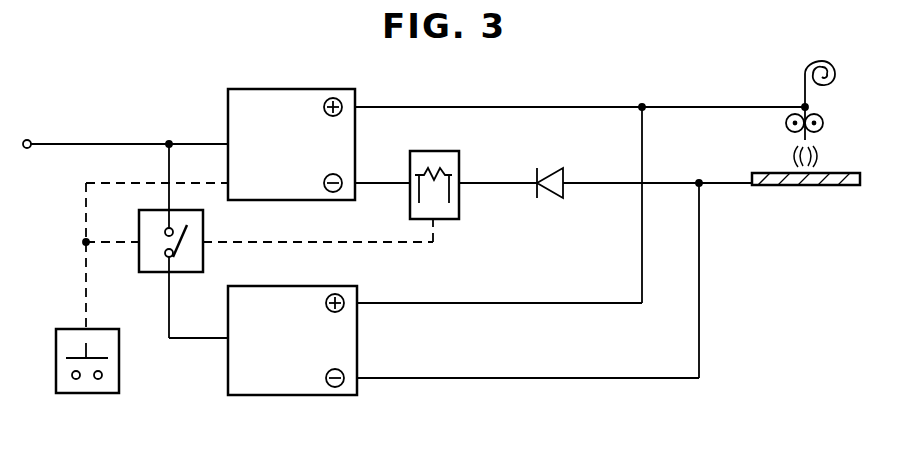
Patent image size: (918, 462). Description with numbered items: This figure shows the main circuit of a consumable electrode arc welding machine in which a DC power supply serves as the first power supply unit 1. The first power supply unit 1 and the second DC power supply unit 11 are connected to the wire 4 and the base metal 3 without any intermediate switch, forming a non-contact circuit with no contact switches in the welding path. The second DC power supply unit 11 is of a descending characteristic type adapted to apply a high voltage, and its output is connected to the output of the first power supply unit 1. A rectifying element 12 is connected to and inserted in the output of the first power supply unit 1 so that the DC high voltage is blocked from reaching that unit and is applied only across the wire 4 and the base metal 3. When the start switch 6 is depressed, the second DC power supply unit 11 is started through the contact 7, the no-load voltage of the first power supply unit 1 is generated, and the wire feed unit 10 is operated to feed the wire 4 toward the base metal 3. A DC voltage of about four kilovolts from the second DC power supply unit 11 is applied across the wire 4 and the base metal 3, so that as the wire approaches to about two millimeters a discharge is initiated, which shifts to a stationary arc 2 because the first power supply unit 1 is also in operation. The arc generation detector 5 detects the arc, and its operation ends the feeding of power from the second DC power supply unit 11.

The first power supply unit 1 is at (228, 103).
The arc 2 is at (826, 155).
The base metal 3 is at (833, 186).
The wire 4 is at (838, 73).
The arc generation detector 5 is at (459, 162).
The start switch 6 is at (119, 380).
The contact 7 is at (139, 266).
The wire feed unit 10 is at (824, 123).
The second DC power supply unit 11 is at (358, 293).
The rectifying element 12 is at (565, 190).